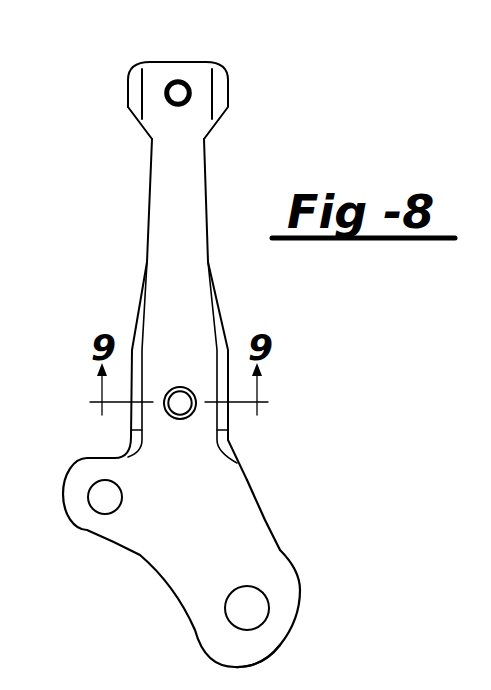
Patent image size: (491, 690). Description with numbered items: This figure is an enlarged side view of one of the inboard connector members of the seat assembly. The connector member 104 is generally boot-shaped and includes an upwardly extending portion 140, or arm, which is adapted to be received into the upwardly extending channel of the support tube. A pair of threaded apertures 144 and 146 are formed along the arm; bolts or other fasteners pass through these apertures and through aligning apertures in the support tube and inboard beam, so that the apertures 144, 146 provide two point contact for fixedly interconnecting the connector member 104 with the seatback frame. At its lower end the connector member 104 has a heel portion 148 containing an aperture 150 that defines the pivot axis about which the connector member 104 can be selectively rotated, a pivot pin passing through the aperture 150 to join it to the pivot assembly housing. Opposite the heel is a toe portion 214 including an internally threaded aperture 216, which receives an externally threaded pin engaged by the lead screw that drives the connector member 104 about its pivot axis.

The connector member 104 is at (88, 118).
The upwardly extending portion 140 is at (163, 213).
The threaded aperture 144 is at (187, 80).
The threaded aperture 146 is at (180, 388).
The heel portion 148 is at (91, 525).
The aperture 150 is at (93, 484).
The toe portion 214 is at (243, 648).
The internally threaded aperture 216 is at (228, 610).